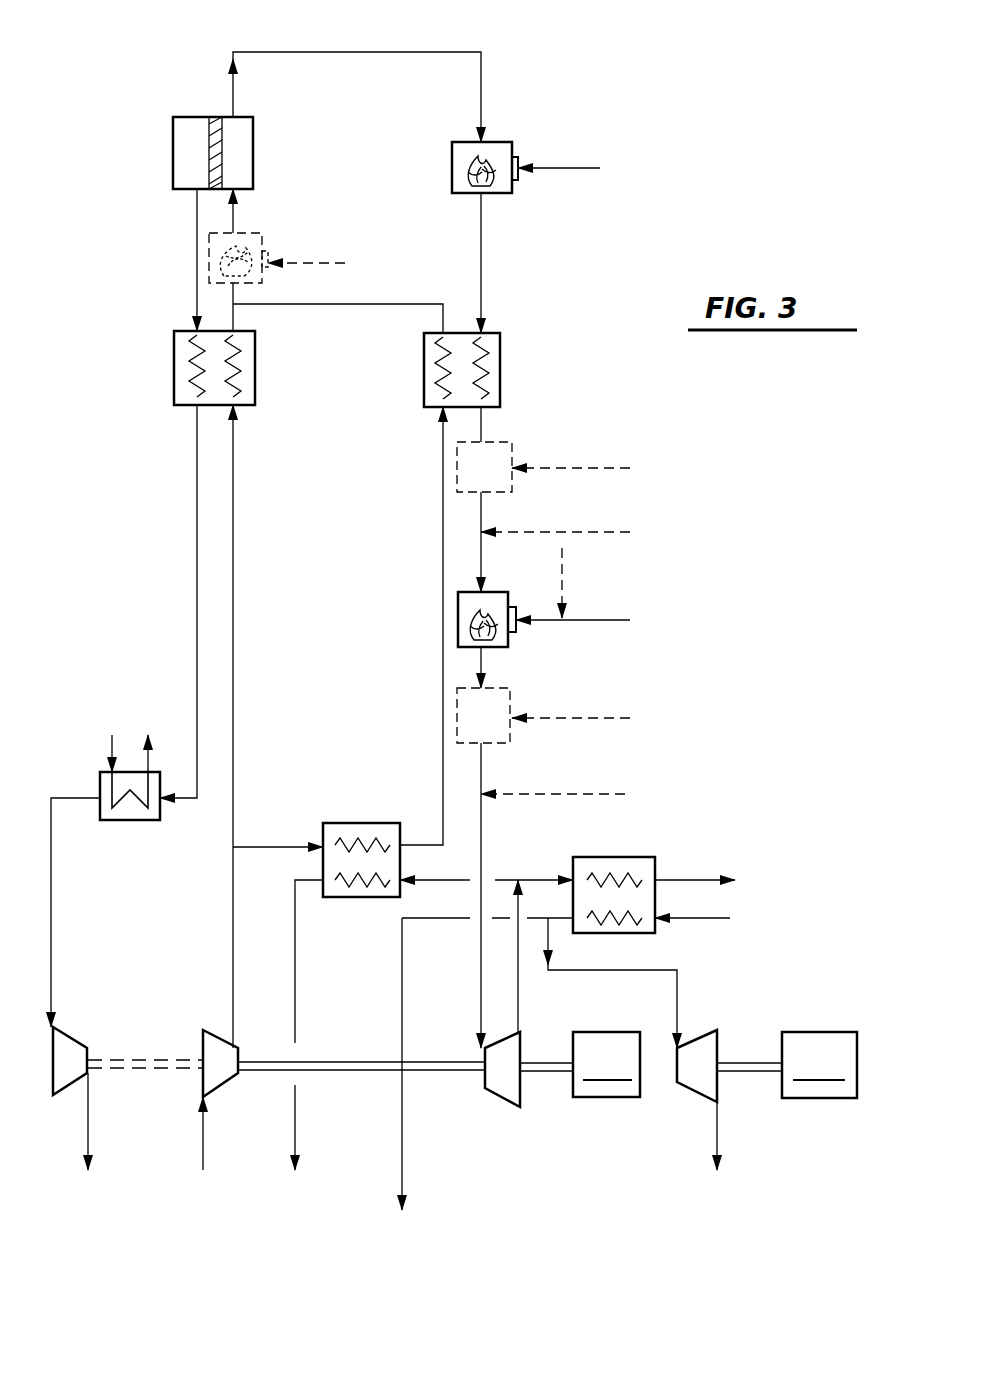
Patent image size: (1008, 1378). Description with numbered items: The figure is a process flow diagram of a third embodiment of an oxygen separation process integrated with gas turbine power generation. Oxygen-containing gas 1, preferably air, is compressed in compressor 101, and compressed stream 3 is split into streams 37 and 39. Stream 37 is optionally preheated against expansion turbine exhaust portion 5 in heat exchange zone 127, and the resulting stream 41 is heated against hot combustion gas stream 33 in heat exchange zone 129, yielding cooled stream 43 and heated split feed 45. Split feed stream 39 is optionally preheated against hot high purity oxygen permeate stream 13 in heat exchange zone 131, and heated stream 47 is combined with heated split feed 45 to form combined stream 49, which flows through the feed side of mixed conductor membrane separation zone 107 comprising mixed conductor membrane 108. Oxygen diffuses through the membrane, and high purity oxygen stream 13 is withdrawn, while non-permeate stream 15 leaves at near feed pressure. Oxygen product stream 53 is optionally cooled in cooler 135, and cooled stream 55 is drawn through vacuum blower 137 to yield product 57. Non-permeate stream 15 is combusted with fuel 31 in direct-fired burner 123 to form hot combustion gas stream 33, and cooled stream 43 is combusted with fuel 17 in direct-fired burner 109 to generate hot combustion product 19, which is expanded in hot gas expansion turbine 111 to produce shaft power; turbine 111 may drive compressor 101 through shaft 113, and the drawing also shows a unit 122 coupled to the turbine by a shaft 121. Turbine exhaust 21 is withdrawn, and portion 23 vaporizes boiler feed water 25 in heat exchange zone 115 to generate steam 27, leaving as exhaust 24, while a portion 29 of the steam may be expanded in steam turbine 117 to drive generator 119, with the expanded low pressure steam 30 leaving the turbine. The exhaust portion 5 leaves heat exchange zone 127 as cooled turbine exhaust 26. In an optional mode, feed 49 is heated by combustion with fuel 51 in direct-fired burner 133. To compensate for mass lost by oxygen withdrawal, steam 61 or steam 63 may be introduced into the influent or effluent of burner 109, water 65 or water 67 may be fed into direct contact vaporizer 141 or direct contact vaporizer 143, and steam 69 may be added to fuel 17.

The oxygen-containing gas 1 is at (205, 1136).
The compressed stream 3 is at (232, 906).
The expansion turbine exhaust portion 5 is at (440, 922).
The high purity oxygen permeate stream 13 is at (197, 248).
The non-permeate stream 15 is at (481, 70).
The fuel 17 is at (553, 623).
The hot combustion product 19 is at (481, 997).
The turbine exhaust 21 is at (520, 996).
The turbine exhaust portion 23 is at (524, 878).
The exhaust outlet 24 is at (692, 878).
The boiler feed water 25 is at (705, 922).
The cooled turbine exhaust 26 is at (297, 1126).
The steam 27 is at (400, 1106).
The steam portion 29 is at (675, 1000).
The low pressure steam outlet 30 is at (719, 1126).
The fuel 31 is at (555, 167).
The hot combustion gas stream 33 is at (483, 262).
The split stream 37 is at (287, 845).
The split feed stream 39 is at (235, 727).
The split feed stream 41 is at (442, 590).
The cooled stream 43 is at (483, 428).
The heated split feed 45 is at (383, 306).
The heated stream 47 is at (235, 318).
The combined stream 49 is at (235, 230).
The fuel 51 is at (335, 262).
The oxygen product stream 53 is at (194, 806).
The cooled stream 55 is at (52, 958).
The product 57 is at (90, 1126).
The steam 61 is at (562, 530).
The steam 63 is at (578, 792).
The water 65 is at (590, 466).
The water 67 is at (565, 716).
The steam 69 is at (563, 580).
The compressor 101 is at (210, 1030).
The mixed conductor membrane separation zone 107 is at (253, 140).
The mixed conductor membrane 108 is at (199, 131).
The direct-fired burner 109 is at (458, 612).
The hot gas expansion turbine 111 is at (503, 1092).
The shaft 113 is at (345, 1060).
The heat exchange zone 115 is at (624, 857).
The steam turbine 117 is at (679, 1090).
The generator 119 is at (787, 1065).
The shaft 121 is at (556, 1076).
The generator 122 is at (606, 1064).
The direct-fired burner 123 is at (452, 140).
The heat exchange zone 127 is at (378, 822).
The heat exchange zone 129 is at (500, 333).
The heat exchange zone 131 is at (255, 395).
The direct-fired burner 133 is at (250, 283).
The cooler 135 is at (128, 822).
The vacuum blower 137 is at (80, 1040).
The direct contact vaporizer 141 is at (457, 468).
The direct contact vaporizer 143 is at (457, 718).